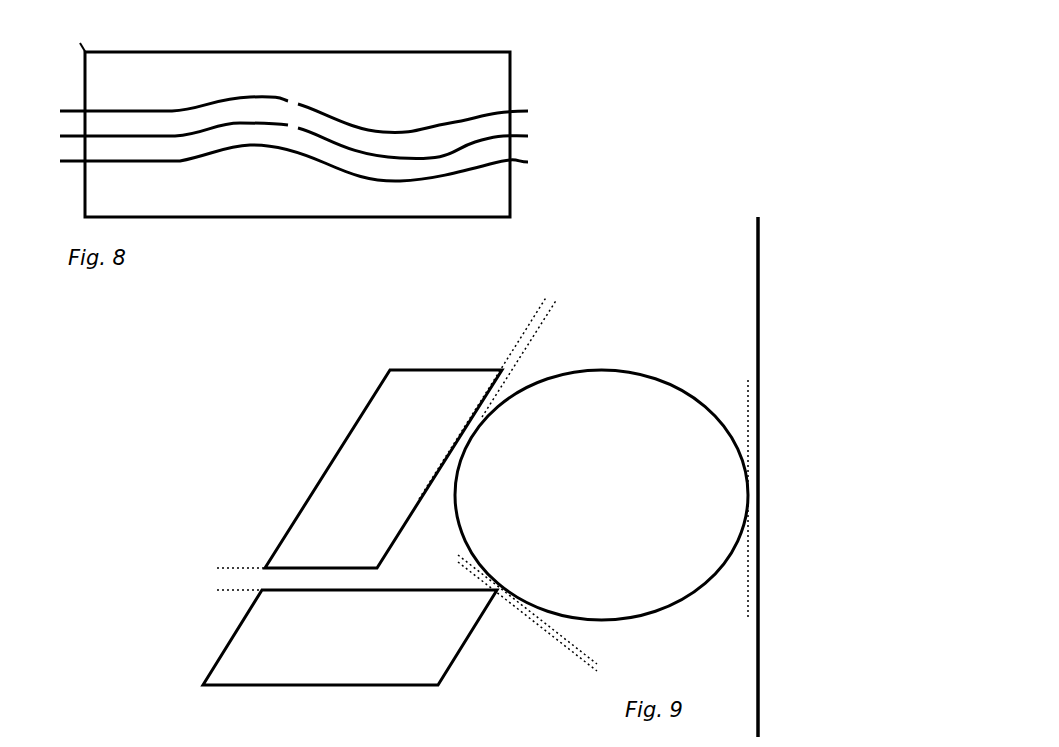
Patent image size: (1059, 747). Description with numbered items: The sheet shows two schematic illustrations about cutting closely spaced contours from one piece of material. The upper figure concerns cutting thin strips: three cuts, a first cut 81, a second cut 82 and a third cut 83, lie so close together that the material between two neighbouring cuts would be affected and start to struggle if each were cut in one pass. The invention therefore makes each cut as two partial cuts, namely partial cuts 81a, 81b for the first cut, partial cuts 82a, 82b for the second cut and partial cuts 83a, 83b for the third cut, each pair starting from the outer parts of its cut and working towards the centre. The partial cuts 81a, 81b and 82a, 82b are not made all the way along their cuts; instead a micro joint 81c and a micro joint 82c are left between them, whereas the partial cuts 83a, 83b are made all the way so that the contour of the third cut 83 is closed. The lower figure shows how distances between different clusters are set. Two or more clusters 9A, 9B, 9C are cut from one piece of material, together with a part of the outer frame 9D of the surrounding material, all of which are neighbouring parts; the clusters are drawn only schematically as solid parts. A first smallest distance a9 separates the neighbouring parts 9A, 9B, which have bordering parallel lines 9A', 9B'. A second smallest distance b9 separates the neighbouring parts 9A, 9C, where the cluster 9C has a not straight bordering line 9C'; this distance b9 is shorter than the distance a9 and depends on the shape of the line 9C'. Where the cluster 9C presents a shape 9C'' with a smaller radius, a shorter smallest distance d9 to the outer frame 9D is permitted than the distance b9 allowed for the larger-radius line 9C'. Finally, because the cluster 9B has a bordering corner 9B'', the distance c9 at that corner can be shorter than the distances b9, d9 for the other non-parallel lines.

In FIG. 8, the first cut 81 is at (280, 70).
In FIG. 8, the second cut 82 is at (280, 199).
In FIG. 8, the third cut 83 is at (280, 222).
In FIG. 8, the first partial cut of the first cut 81a is at (170, 110).
In FIG. 8, the second partial cut of the first cut 81b is at (387, 132).
In FIG. 8, the micro joint of the first cut 81c is at (292, 100).
In FIG. 8, the first partial cut of the second cut 82a is at (175, 140).
In FIG. 8, the second partial cut of the second cut 82b is at (402, 160).
In FIG. 8, the micro joint of the second cut 82c is at (293, 128).
In FIG. 8, the first partial cut of the third cut 83a is at (205, 160).
In FIG. 8, the second partial cut of the third cut 83b is at (325, 163).
In FIG. 9, the first cluster 9A is at (372, 469).
In FIG. 9, the bordering parallel line of the first cluster 9A' is at (310, 512).
In FIG. 9, the second cluster 9B is at (350, 661).
In FIG. 9, the bordering parallel line of the second cluster 9B' is at (379, 661).
In FIG. 9, the bordering corner of the second cluster 9B'' is at (467, 652).
In FIG. 9, the third cluster 9C is at (601, 503).
In FIG. 9, the not straight bordering line of the third cluster 9C' is at (577, 391).
In FIG. 9, the smaller-radius shape of the third cluster 9C'' is at (720, 581).
In FIG. 9, the outer frame 9D is at (757, 279).
In FIG. 9, the first smallest distance a9 is at (223, 597).
In FIG. 9, the second smallest distance b9 is at (512, 298).
In FIG. 9, the corner distance c9 is at (613, 638).
In FIG. 9, the smallest distance to the outer frame d9 is at (765, 377).